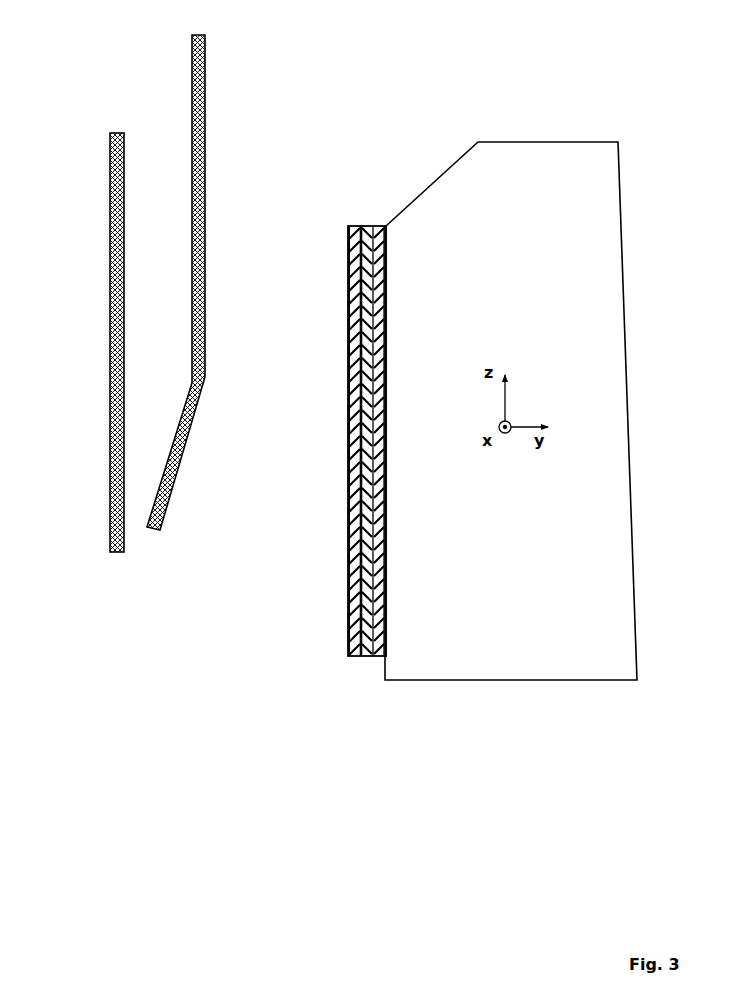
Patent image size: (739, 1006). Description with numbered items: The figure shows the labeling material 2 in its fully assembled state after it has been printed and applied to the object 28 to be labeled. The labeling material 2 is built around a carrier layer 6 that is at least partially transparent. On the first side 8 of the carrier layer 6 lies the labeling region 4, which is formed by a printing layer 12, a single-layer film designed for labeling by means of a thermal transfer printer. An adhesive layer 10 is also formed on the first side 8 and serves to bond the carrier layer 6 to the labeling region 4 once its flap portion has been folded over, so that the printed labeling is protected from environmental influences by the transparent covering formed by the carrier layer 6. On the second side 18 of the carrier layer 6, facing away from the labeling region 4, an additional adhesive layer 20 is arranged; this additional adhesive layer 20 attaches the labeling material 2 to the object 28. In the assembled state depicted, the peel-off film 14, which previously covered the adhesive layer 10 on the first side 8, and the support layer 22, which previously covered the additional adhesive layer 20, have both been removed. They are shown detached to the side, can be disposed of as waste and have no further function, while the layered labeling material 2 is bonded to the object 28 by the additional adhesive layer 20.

The labeling material 2 is at (363, 168).
The labeling region 4 is at (360, 508).
The carrier layer 6 is at (350, 243).
The first side 8 is at (373, 345).
The adhesive layer 10 is at (352, 382).
The printing layer 12 is at (362, 604).
The peel-off film 14 is at (195, 93).
The second side 18 is at (348, 440).
The additional adhesive layer 20 is at (385, 573).
The support layer 22 is at (112, 155).
The object 28 is at (503, 525).